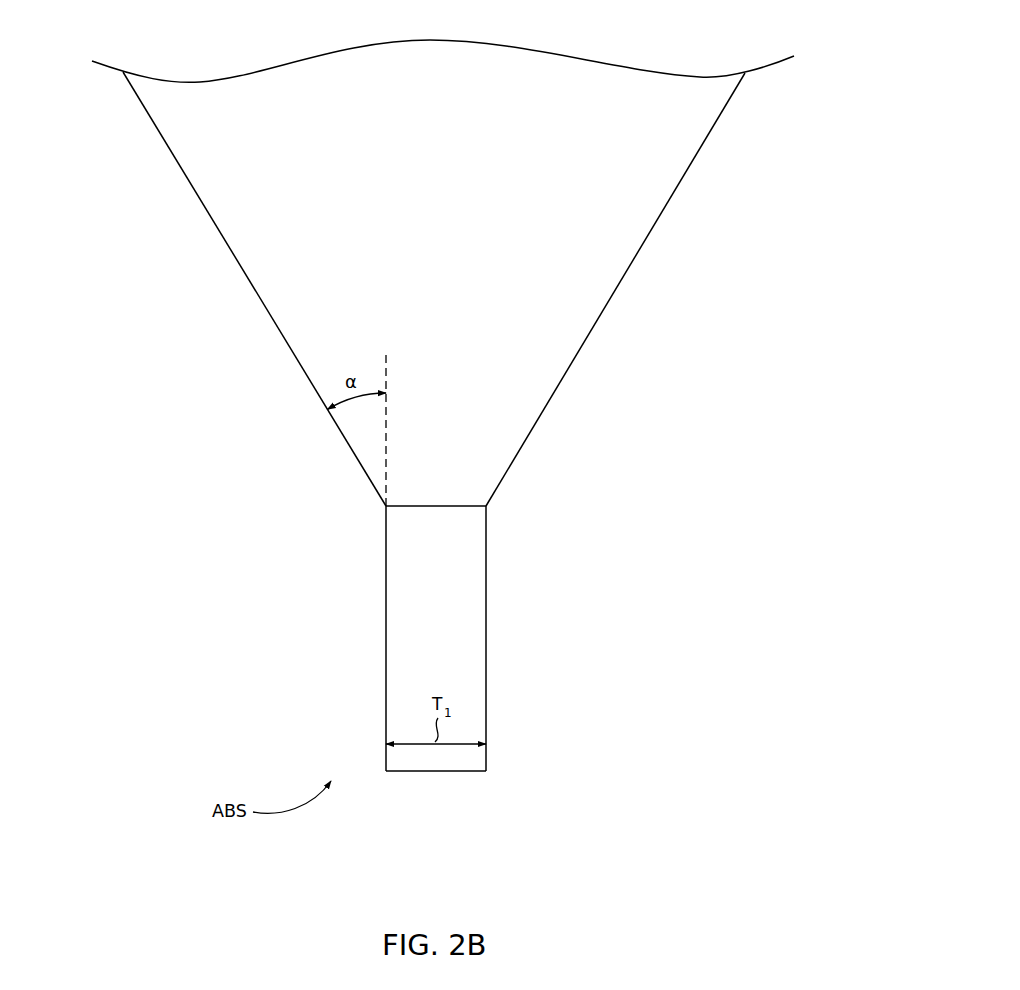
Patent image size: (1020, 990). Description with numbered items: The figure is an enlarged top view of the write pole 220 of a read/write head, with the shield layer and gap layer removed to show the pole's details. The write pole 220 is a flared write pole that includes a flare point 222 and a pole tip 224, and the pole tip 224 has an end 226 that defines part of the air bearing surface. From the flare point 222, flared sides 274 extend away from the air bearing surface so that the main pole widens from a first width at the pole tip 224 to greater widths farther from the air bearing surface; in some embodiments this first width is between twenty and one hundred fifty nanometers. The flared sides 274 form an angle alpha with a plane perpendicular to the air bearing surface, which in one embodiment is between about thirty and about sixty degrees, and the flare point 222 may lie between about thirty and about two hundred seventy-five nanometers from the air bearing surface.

The write pole 220 is at (459, 478).
The flare point 222 is at (445, 507).
The pole tip 224 is at (450, 629).
The end 226 is at (450, 771).
The flared sides 274 is at (274, 322).